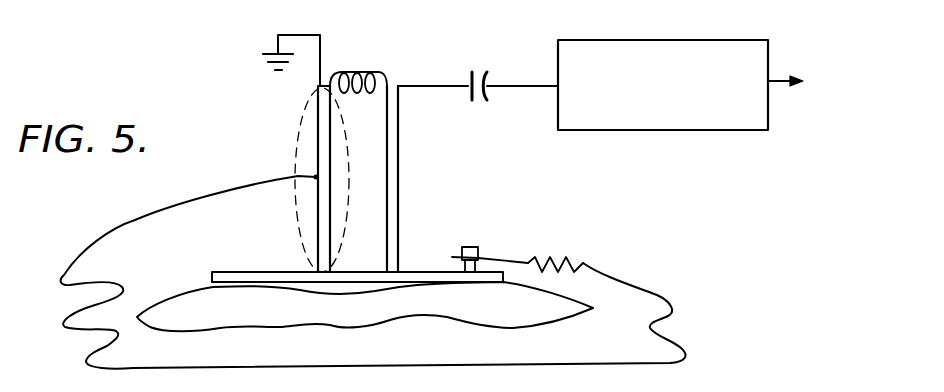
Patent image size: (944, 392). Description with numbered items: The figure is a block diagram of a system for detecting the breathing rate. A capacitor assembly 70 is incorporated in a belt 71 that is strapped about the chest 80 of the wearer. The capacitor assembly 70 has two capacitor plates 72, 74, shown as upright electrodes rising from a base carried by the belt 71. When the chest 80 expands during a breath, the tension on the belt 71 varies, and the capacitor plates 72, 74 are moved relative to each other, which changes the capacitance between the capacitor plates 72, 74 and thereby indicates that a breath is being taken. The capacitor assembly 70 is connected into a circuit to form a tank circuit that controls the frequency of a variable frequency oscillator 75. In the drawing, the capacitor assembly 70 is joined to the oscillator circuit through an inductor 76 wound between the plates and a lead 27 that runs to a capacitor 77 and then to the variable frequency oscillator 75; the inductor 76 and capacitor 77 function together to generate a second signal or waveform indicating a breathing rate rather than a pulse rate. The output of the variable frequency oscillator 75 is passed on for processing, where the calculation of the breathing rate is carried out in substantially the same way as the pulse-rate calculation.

The capacitor assembly 70 is at (357, 60).
The capacitor plate 72 is at (318, 222).
The capacitor plate 74 is at (398, 208).
The inductor 76 is at (375, 70).
The lead 27 is at (422, 82).
The capacitor 77 is at (486, 71).
The variable frequency oscillator 75 is at (635, 40).
The belt 71 is at (647, 293).
The chest 80 is at (390, 317).